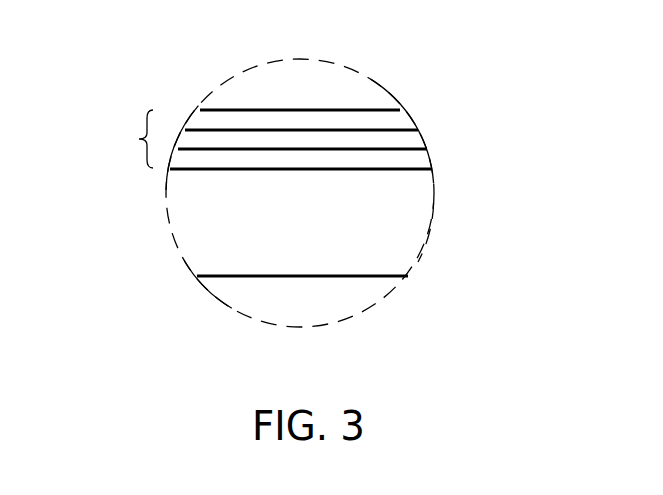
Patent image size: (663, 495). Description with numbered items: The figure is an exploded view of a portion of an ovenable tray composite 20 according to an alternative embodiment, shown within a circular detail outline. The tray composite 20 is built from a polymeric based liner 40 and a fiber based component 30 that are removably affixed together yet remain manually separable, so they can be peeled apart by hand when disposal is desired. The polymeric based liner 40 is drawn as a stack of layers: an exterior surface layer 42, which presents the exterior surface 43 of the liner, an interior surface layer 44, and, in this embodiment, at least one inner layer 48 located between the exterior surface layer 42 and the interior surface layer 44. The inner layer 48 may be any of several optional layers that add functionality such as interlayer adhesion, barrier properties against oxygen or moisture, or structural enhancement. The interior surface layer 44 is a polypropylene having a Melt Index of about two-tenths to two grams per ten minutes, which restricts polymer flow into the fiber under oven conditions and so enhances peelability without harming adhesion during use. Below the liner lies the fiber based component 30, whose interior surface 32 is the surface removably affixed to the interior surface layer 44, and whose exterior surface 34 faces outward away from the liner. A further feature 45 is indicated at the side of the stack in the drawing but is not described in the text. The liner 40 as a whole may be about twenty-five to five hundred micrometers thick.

The ovenable tray composite 20 is at (397, 323).
The fiber based component 30 is at (393, 252).
The interior surface 32 is at (402, 168).
The exterior surface 34 is at (260, 277).
The polymeric based liner 40 is at (146, 139).
The exterior surface layer 42 is at (255, 120).
The exterior surface 43 is at (357, 108).
The interior surface layer 44 is at (243, 158).
The sidewall 45 is at (378, 170).
The inner layer 48 is at (222, 140).